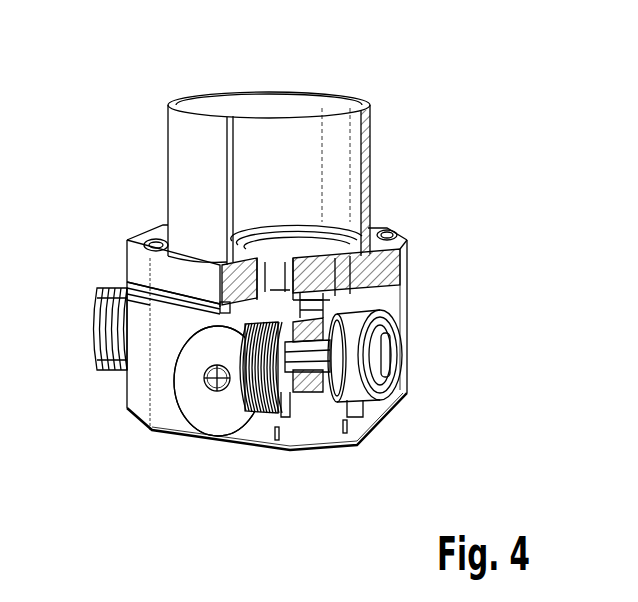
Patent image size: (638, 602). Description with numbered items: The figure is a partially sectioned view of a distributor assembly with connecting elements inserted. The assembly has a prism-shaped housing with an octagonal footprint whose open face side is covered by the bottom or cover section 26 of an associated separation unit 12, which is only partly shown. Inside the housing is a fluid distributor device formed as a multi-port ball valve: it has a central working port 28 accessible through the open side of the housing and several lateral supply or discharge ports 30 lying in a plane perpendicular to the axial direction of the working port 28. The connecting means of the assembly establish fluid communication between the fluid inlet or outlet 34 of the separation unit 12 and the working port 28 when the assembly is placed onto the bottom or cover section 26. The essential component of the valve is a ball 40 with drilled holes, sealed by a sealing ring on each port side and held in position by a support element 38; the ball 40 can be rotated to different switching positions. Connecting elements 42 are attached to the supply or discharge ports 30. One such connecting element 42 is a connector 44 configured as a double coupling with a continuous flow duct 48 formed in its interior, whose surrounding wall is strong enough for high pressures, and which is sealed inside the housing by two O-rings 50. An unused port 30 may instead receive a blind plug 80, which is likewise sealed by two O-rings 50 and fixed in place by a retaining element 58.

The separation unit 12 is at (380, 173).
The bottom or cover section 26 is at (397, 260).
The central working port 28 is at (280, 250).
The supply or discharge port 30 is at (293, 352).
The fluid inlet or outlet 34 is at (267, 250).
The support element 38 is at (313, 353).
The ball 40 is at (290, 352).
The connecting element 42 is at (216, 391).
The connector 44 is at (112, 373).
The flow duct 48 is at (93, 315).
The O-ring 50 is at (127, 284).
The retaining element 58 is at (403, 396).
The blind plug 80 is at (228, 426).